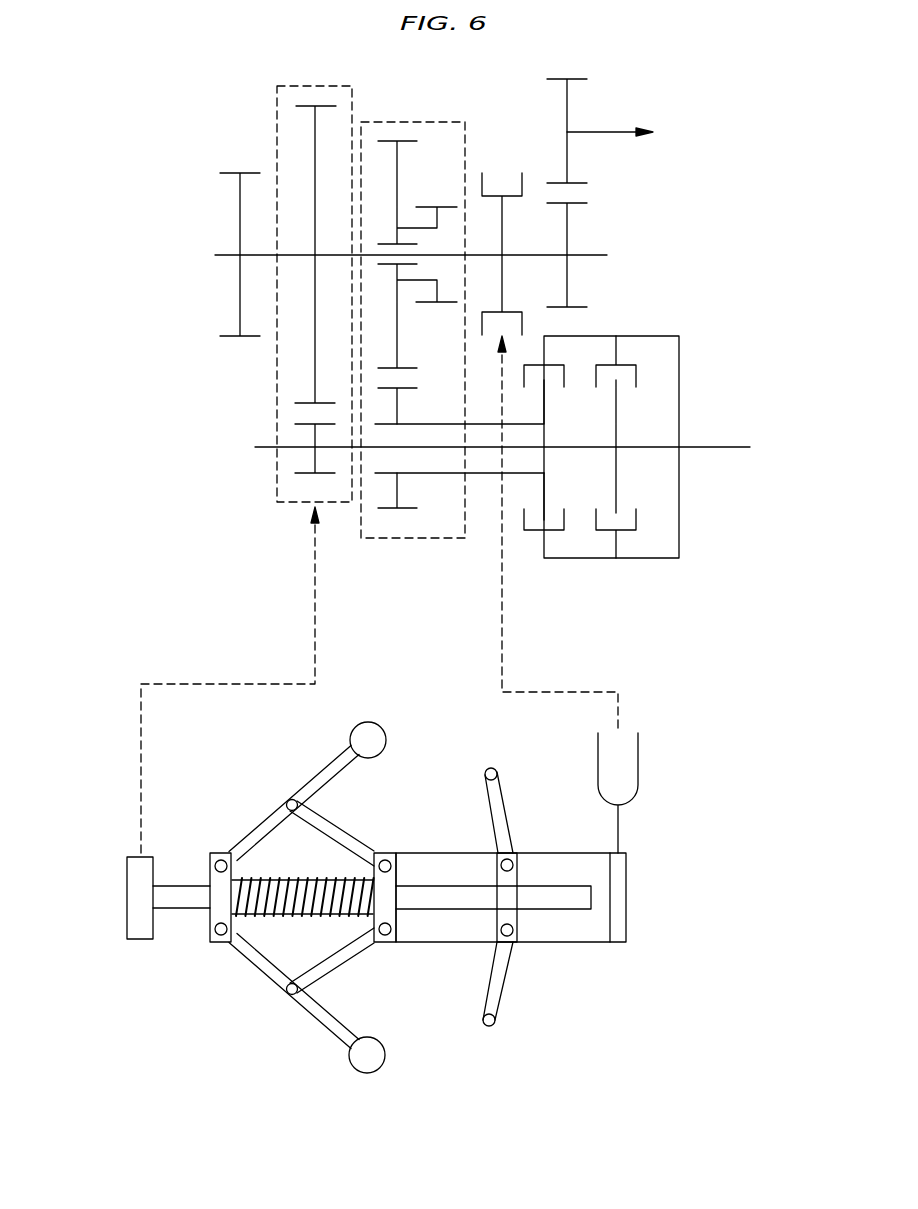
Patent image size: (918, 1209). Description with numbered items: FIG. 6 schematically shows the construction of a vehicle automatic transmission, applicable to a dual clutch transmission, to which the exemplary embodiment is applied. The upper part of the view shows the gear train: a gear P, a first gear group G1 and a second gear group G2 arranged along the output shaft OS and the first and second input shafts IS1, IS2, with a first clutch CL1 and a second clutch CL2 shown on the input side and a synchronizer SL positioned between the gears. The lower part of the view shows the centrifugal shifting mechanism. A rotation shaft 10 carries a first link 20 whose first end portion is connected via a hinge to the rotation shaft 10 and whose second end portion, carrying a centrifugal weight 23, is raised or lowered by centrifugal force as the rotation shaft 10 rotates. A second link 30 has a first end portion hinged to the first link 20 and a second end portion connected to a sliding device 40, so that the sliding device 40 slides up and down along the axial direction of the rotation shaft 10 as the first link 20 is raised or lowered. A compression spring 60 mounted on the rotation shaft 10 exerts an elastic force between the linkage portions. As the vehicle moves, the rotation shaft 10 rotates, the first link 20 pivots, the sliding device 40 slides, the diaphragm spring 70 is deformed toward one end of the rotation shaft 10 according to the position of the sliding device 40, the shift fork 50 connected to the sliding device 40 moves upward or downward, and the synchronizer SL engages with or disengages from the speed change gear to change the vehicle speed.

The parking gear P is at (240, 241).
The first gear set G1 is at (314, 281).
The second gear set G2 is at (413, 316).
The synchronizer SL is at (494, 193).
The output shaft OS is at (603, 253).
The first input shaft IS1 is at (261, 450).
The second input shaft IS2 is at (513, 473).
The first clutch CL1 is at (617, 418).
The second clutch CL2 is at (543, 494).
The rotation shaft 10 is at (175, 860).
The first link 20 is at (268, 817).
The centrifugal weight 23 is at (367, 732).
The second link 30 is at (347, 835).
The sliding device 40 is at (432, 853).
The shift fork 50 is at (620, 828).
The compression spring 60 is at (275, 910).
The diaphragm spring 70 is at (502, 992).